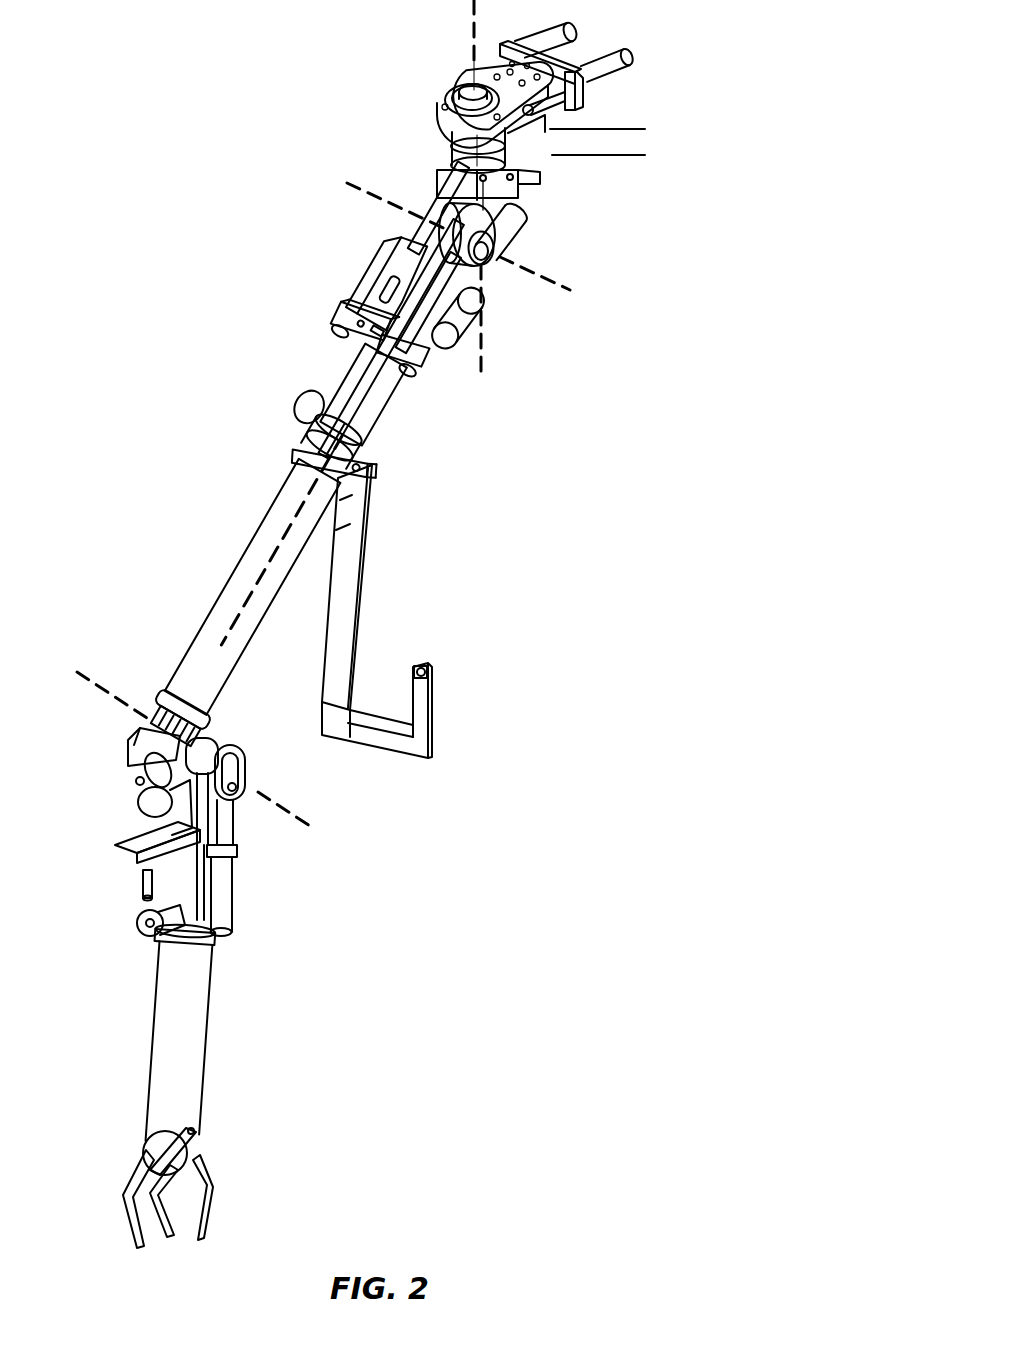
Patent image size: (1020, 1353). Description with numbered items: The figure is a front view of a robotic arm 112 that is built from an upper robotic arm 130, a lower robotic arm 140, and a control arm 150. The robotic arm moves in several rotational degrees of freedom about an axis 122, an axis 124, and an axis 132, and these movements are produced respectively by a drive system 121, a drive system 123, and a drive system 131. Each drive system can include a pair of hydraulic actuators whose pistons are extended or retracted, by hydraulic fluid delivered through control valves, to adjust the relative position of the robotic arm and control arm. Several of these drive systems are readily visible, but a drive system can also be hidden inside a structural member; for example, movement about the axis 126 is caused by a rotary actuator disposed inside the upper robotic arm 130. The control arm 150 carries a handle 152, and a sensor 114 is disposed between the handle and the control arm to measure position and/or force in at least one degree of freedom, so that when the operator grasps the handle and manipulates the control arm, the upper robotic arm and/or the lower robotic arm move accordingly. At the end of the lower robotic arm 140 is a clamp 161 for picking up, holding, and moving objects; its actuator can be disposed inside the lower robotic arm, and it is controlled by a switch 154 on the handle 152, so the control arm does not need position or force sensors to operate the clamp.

The robotic arm 112 is at (146, 405).
The sensor 114 is at (377, 722).
The drive system 121 is at (373, 267).
The axis 122 is at (548, 268).
The drive system 123 is at (578, 30).
The axis 124 is at (468, 36).
The axis 126 is at (272, 553).
The upper robotic arm 130 is at (275, 493).
The drive system 131 is at (228, 898).
The axis 132 is at (310, 827).
The lower robotic arm 140 is at (193, 1048).
The control arm 150 is at (353, 555).
The handle 152 is at (432, 705).
The switch 154 is at (432, 667).
The clamp 161 is at (213, 1185).